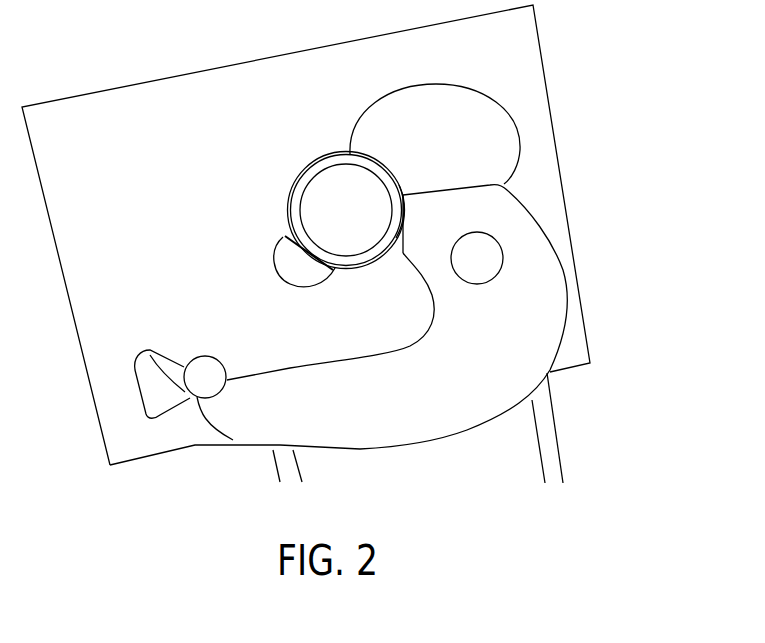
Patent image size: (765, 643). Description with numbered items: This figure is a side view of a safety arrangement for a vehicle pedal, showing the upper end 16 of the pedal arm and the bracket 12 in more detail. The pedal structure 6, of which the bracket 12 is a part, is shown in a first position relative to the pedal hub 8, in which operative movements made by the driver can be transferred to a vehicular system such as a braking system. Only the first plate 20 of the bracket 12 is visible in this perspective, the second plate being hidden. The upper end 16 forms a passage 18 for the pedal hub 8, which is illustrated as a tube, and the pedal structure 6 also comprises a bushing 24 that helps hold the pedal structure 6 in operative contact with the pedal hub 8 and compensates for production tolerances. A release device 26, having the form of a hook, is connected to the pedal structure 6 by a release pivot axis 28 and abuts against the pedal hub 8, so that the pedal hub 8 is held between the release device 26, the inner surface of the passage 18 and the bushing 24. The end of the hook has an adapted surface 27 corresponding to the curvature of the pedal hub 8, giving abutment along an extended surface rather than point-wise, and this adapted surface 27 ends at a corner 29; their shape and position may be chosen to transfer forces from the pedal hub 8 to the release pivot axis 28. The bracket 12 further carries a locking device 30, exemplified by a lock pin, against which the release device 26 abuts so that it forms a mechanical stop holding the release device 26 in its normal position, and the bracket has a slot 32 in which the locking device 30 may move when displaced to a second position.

The pedal structure 6 is at (598, 323).
The pedal hub 8 is at (325, 155).
The bracket 12 is at (560, 135).
The upper end 16 is at (578, 451).
The passage 18 is at (461, 161).
The first plate 20 is at (205, 161).
The bushing 24 is at (297, 260).
The release device 26 is at (396, 411).
The adapted surface 27 is at (402, 226).
The release pivot axis 28 is at (483, 260).
The corner 29 is at (402, 255).
The locking device 30 is at (203, 387).
The slot 32 is at (152, 392).